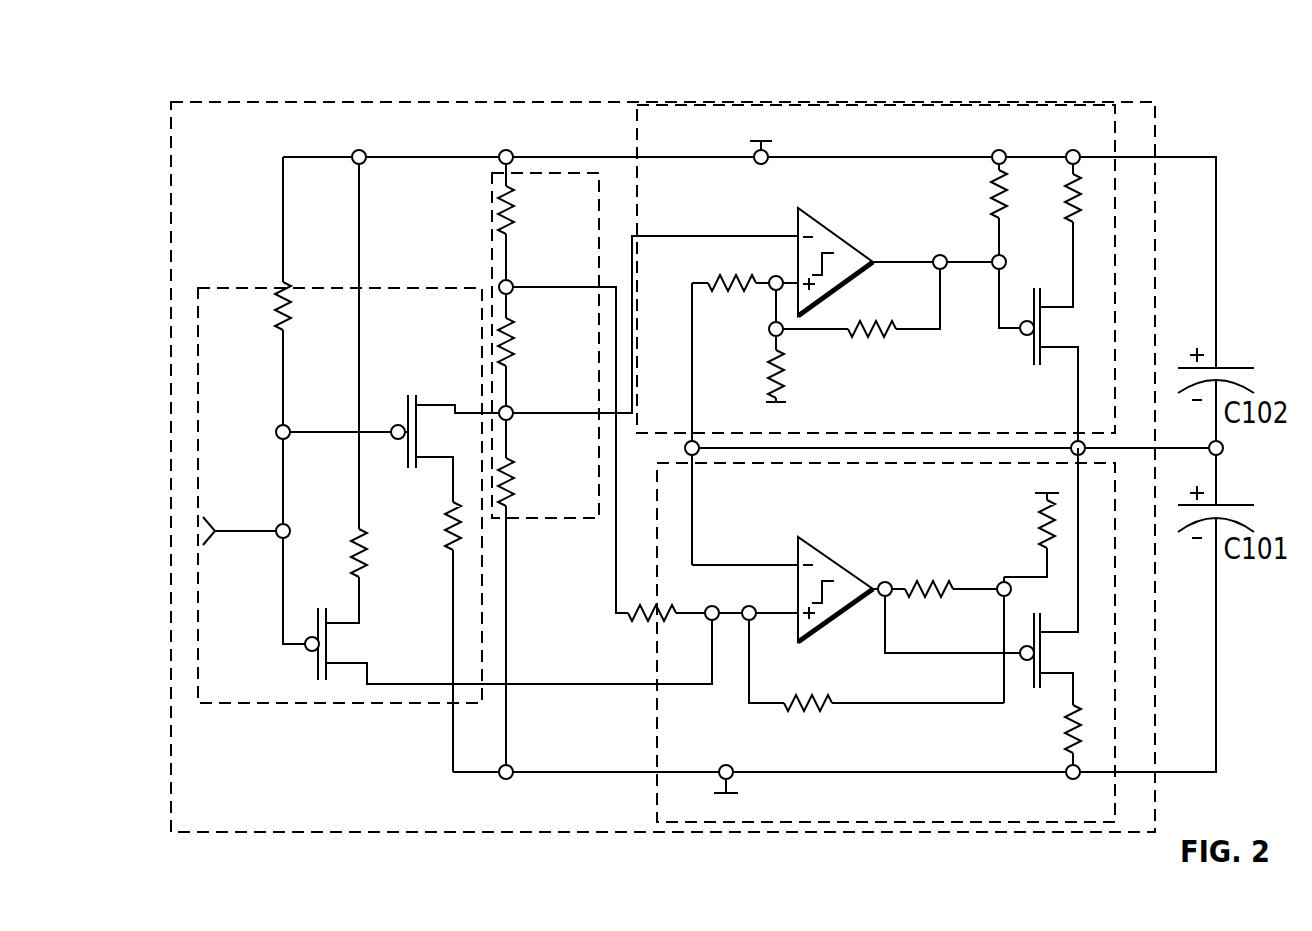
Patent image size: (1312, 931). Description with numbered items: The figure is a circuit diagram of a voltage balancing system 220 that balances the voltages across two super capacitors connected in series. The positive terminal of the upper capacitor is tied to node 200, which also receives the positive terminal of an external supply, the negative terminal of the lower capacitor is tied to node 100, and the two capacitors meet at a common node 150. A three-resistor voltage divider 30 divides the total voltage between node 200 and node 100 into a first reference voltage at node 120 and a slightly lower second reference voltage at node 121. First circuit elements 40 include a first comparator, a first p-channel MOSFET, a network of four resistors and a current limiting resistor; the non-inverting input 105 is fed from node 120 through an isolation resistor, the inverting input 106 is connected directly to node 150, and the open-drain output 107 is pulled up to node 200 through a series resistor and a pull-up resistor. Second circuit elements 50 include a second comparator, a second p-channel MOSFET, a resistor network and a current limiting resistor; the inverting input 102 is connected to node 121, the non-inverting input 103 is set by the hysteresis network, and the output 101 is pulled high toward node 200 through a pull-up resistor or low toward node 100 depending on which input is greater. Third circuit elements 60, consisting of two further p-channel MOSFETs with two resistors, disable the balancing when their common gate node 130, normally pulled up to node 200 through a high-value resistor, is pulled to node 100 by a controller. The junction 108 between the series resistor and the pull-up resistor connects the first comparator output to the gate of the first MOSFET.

The voltage balancing system 220 is at (291, 88).
The voltage divider 30 is at (580, 365).
The third circuit elements 60 is at (385, 492).
The second circuit elements 50 is at (781, 276).
The first circuit elements 40 is at (854, 637).
The node 120 is at (537, 269).
The node 121 is at (535, 398).
The node 130 is at (246, 521).
The common node 150 is at (954, 490).
The node 100 is at (888, 643).
The node 200 is at (766, 273).
The output 101 is at (912, 246).
The inverting input 102 is at (749, 217).
The non-inverting input 103 is at (771, 266).
The non-inverting input 105 is at (733, 596).
The inverting input 106 is at (749, 548).
The output 107 is at (877, 568).
The feedback node 108 is at (996, 571).